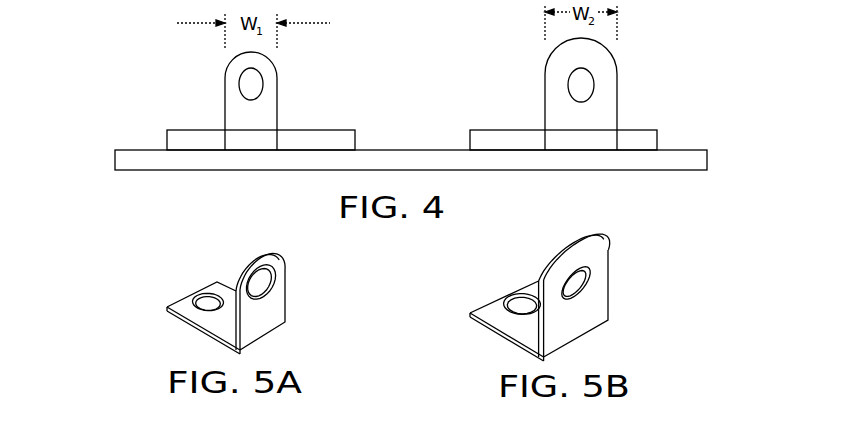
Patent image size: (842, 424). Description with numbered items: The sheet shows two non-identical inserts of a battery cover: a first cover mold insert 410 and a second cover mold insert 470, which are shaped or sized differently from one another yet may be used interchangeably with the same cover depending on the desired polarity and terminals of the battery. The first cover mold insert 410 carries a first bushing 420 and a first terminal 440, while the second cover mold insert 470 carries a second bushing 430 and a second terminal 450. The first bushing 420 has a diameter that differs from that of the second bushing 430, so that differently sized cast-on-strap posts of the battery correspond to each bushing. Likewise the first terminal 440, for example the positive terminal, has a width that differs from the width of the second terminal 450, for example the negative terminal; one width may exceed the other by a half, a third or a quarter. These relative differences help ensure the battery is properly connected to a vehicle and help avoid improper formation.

In FIG. 4, the first cover mold insert 410 is at (229, 101).
In FIG. 5A, the first cover mold insert 410 is at (202, 303).
In FIG. 5A, the first bushing 420 is at (200, 292).
In FIG. 5B, the second bushing 430 is at (515, 288).
In FIG. 4, the first terminal 440 is at (279, 90).
In FIG. 5A, the first terminal 440 is at (287, 269).
In FIG. 4, the second terminal 450 is at (543, 97).
In FIG. 5B, the second terminal 450 is at (612, 262).
In FIG. 4, the second cover mold insert 470 is at (622, 91).
In FIG. 5B, the second cover mold insert 470 is at (610, 284).